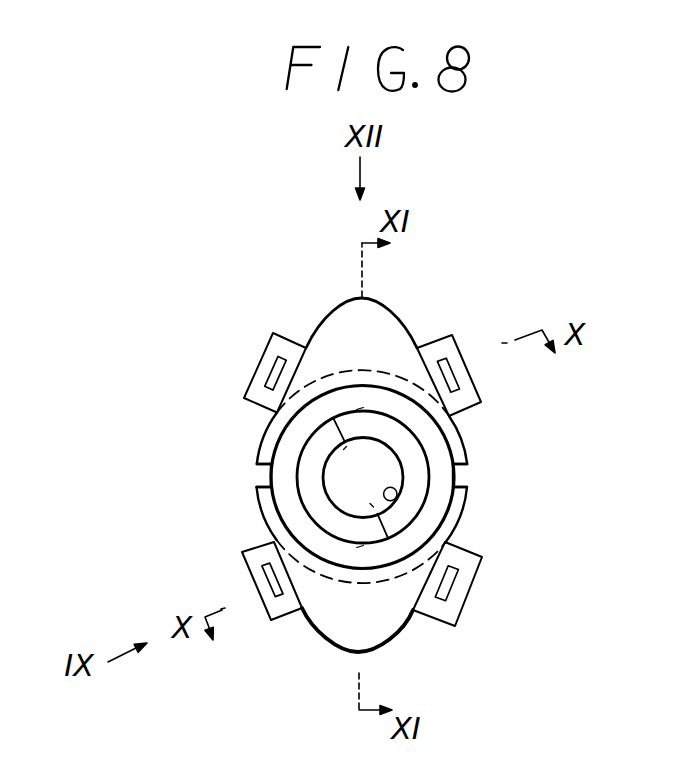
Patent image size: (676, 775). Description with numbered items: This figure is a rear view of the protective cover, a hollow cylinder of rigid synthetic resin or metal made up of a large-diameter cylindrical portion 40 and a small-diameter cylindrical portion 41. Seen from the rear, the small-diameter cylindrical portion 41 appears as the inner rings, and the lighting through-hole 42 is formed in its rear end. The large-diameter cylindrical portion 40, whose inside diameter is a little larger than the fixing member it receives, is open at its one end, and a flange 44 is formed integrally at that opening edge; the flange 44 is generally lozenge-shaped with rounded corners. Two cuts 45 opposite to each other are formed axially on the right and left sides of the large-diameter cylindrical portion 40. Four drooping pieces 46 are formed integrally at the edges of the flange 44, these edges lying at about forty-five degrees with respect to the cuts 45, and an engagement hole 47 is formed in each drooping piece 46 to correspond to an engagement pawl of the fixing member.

The large-diameter cylindrical portion 40 is at (258, 432).
The small-diameter cylindrical portion 41 is at (418, 448).
The lighting through-hole 42 is at (397, 498).
The flange 44 is at (384, 304).
The cuts 45 is at (255, 478).
The drooping pieces 46 is at (268, 329).
The engagement hole 47 is at (275, 371).